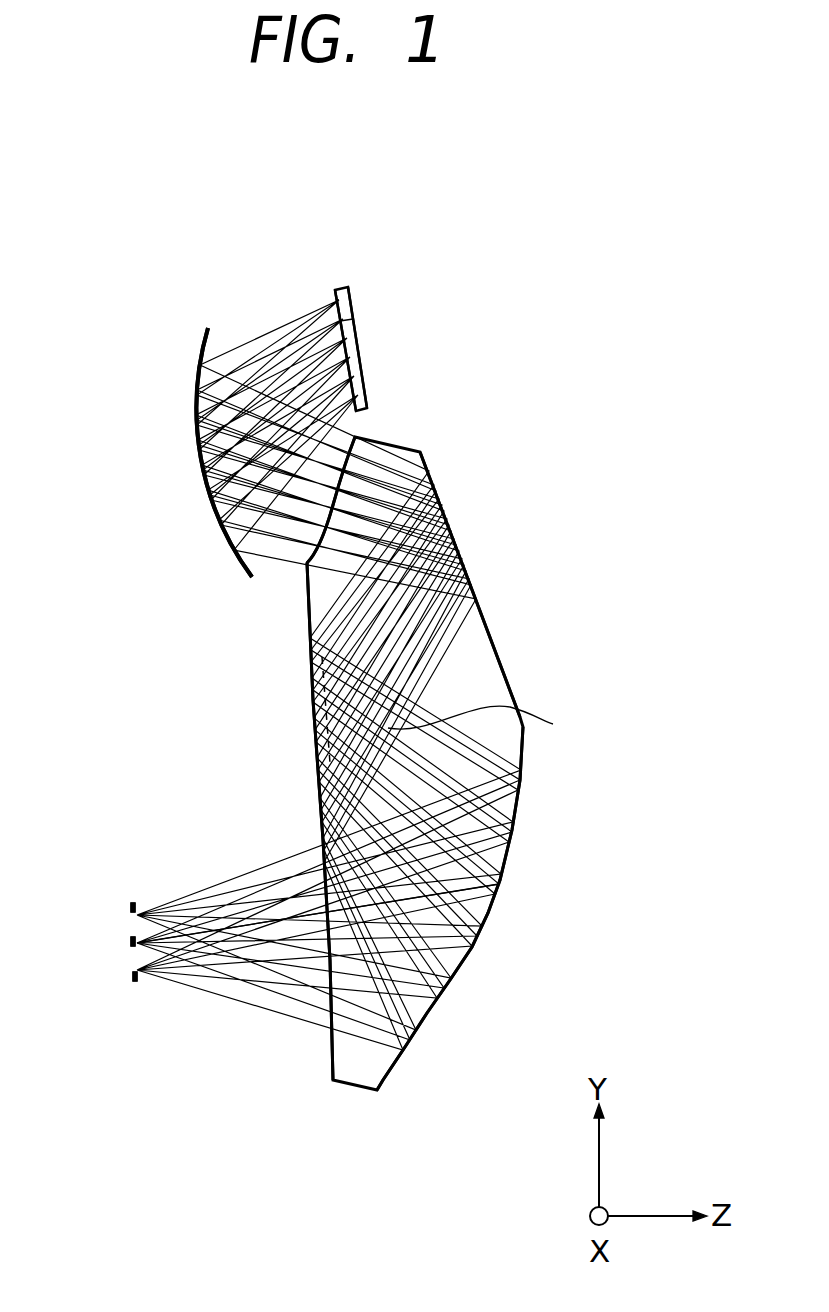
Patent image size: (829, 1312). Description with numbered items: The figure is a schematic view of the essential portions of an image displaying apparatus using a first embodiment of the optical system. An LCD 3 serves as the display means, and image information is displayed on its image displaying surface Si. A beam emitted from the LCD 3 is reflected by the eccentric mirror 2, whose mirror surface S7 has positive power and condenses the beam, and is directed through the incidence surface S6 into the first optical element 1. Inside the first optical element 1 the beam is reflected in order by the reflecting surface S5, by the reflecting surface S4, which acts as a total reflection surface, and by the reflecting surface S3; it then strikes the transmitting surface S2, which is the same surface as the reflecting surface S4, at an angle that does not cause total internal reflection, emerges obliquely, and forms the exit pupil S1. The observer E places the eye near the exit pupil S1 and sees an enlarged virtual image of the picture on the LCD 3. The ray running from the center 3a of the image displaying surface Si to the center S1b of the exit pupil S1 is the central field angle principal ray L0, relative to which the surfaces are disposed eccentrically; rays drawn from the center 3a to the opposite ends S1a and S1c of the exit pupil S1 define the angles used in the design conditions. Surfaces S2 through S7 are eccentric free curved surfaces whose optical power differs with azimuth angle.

The first optical element 1 is at (490, 673).
The eccentric mirror 2 is at (200, 354).
The LCD 3 is at (337, 263).
The center of the image displaying surface 3a is at (363, 350).
The image displaying surface Si is at (353, 317).
The exit pupil S1 is at (133, 905).
The end of the exit pupil S1a is at (130, 911).
The center of the exit pupil S1b is at (130, 943).
The end of the exit pupil S1c is at (130, 975).
The observer E is at (147, 1003).
The central field angle principal ray L0 is at (245, 942).
The transmitting surface S2 is at (318, 729).
The reflecting surface S3 is at (490, 898).
The reflecting surface S4 is at (326, 710).
The reflecting surface S5 is at (445, 500).
The incidence surface S6 is at (307, 563).
The reflecting surface S7 is at (200, 459).